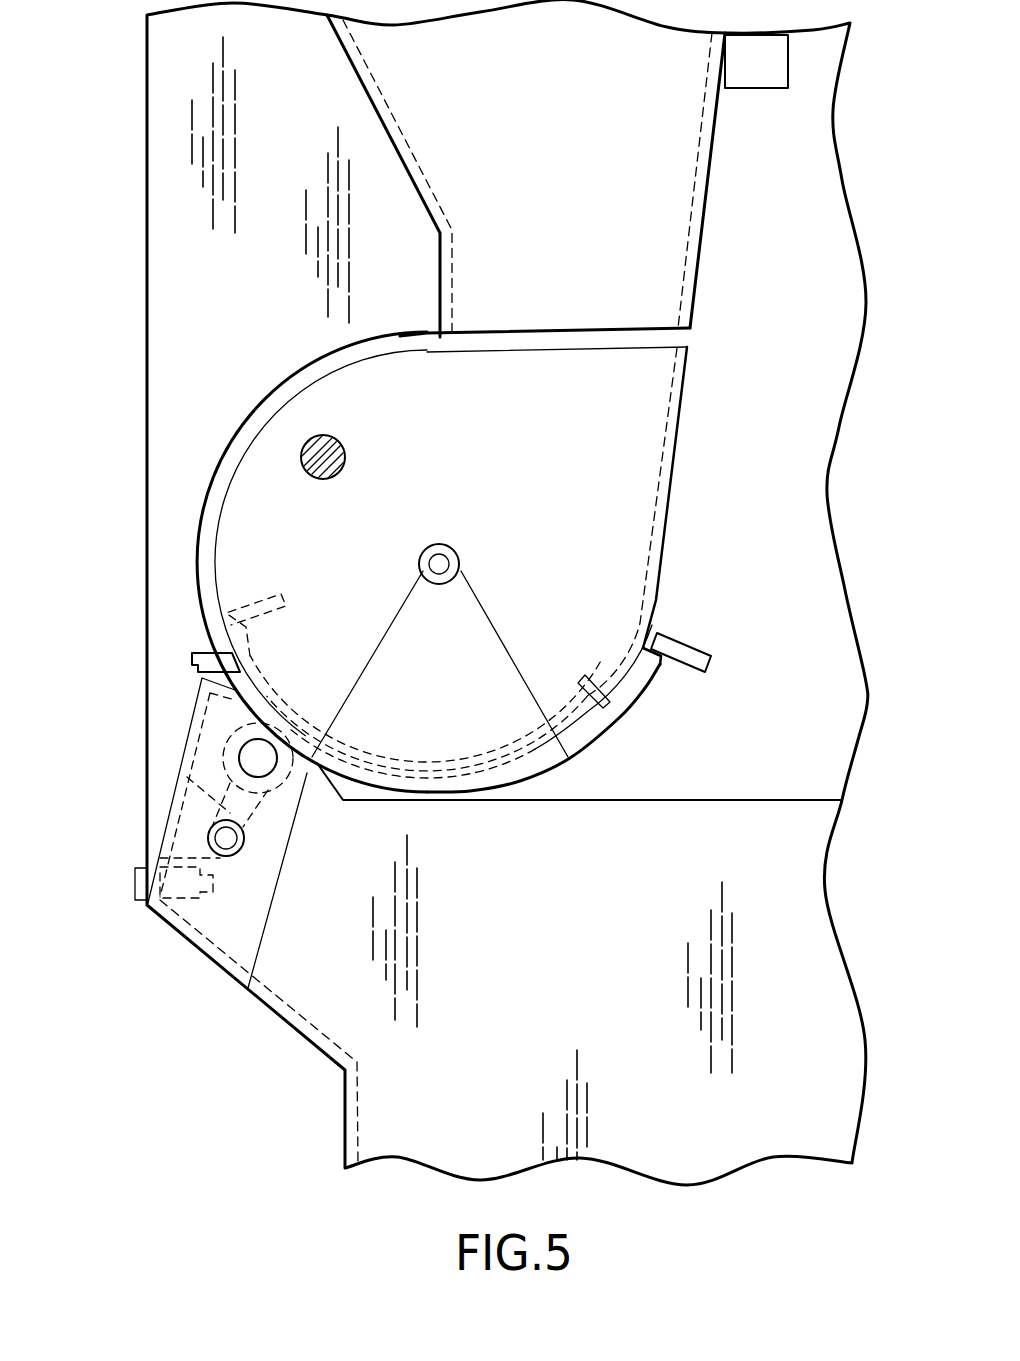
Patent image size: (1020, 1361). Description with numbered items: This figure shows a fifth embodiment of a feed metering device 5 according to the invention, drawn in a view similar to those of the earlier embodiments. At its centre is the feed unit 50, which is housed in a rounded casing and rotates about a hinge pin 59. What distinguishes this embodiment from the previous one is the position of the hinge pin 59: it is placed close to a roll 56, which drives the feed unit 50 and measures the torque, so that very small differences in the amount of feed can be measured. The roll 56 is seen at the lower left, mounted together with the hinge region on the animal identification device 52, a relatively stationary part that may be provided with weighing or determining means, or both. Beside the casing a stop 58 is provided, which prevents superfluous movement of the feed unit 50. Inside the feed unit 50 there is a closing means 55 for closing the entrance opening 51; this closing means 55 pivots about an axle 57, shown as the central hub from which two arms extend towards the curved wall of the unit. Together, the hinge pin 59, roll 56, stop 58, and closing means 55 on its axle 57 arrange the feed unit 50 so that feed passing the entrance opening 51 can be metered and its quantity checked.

The paper feed unit 5 is at (688, 483).
The feed unit 50 is at (540, 762).
The entrance opening 51 is at (306, 384).
The animal identification device 52 is at (232, 938).
The closing means 55 is at (456, 700).
The roll 56 is at (233, 748).
The axle 57 is at (457, 552).
The stop 58 is at (675, 637).
The hinge pin 59 is at (346, 455).